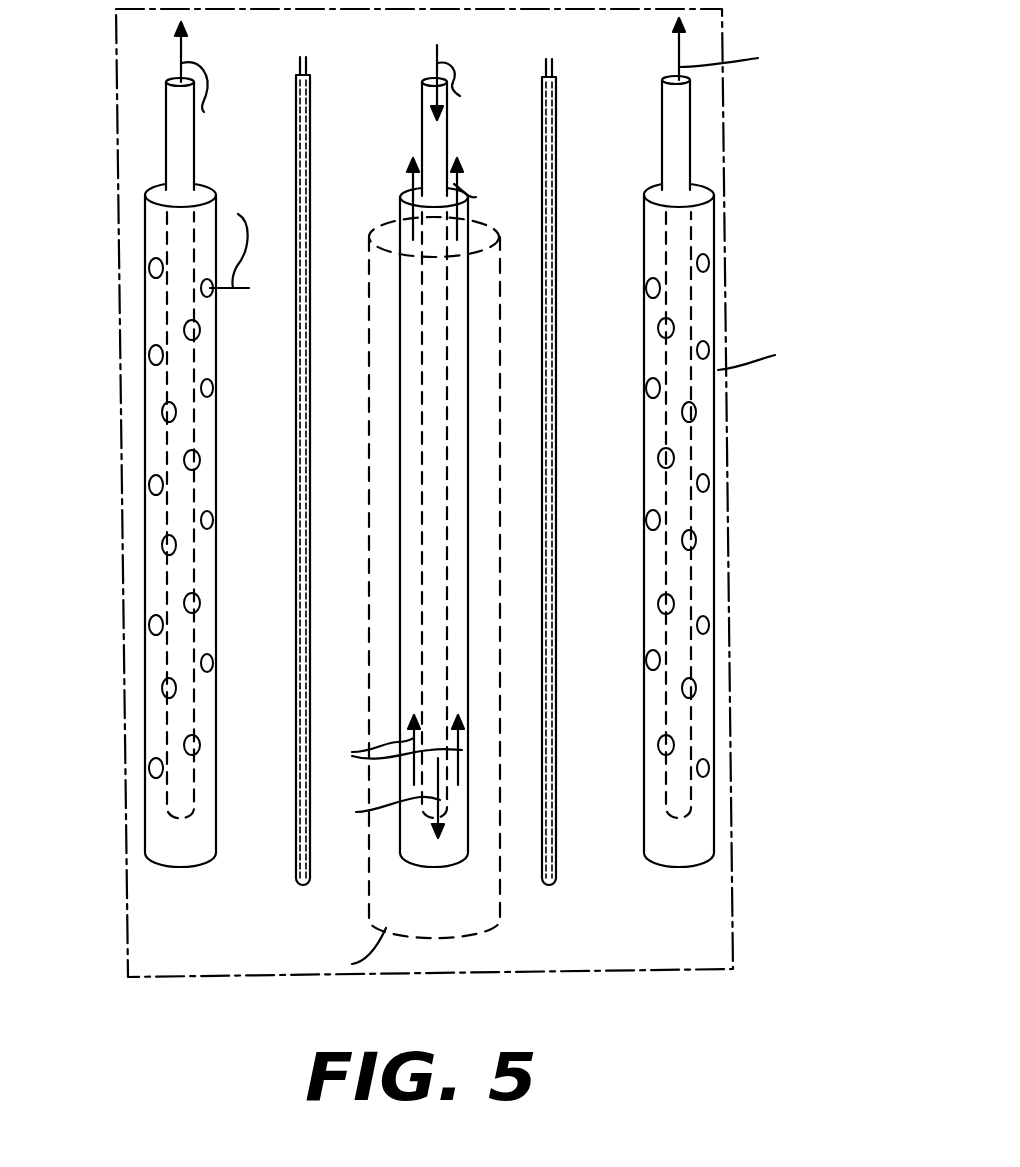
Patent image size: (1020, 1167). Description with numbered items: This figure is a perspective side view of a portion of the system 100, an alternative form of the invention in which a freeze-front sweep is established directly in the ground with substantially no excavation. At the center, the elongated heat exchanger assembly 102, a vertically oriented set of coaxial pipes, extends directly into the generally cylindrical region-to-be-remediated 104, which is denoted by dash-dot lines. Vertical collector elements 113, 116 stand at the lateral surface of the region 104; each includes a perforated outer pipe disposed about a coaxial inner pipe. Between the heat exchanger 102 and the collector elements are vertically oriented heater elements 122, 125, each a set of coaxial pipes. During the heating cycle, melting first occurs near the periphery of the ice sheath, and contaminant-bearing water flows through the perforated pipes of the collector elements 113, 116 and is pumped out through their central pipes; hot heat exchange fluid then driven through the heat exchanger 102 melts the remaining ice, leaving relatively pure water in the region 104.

The system 100 is at (56, 347).
The heat exchanger assembly 102 is at (451, 877).
The region-to-be-remediated 104 is at (165, 929).
The collector element 113 is at (708, 803).
The collector element 116 is at (150, 828).
The heater element 122 is at (300, 787).
The heater element 125 is at (557, 712).